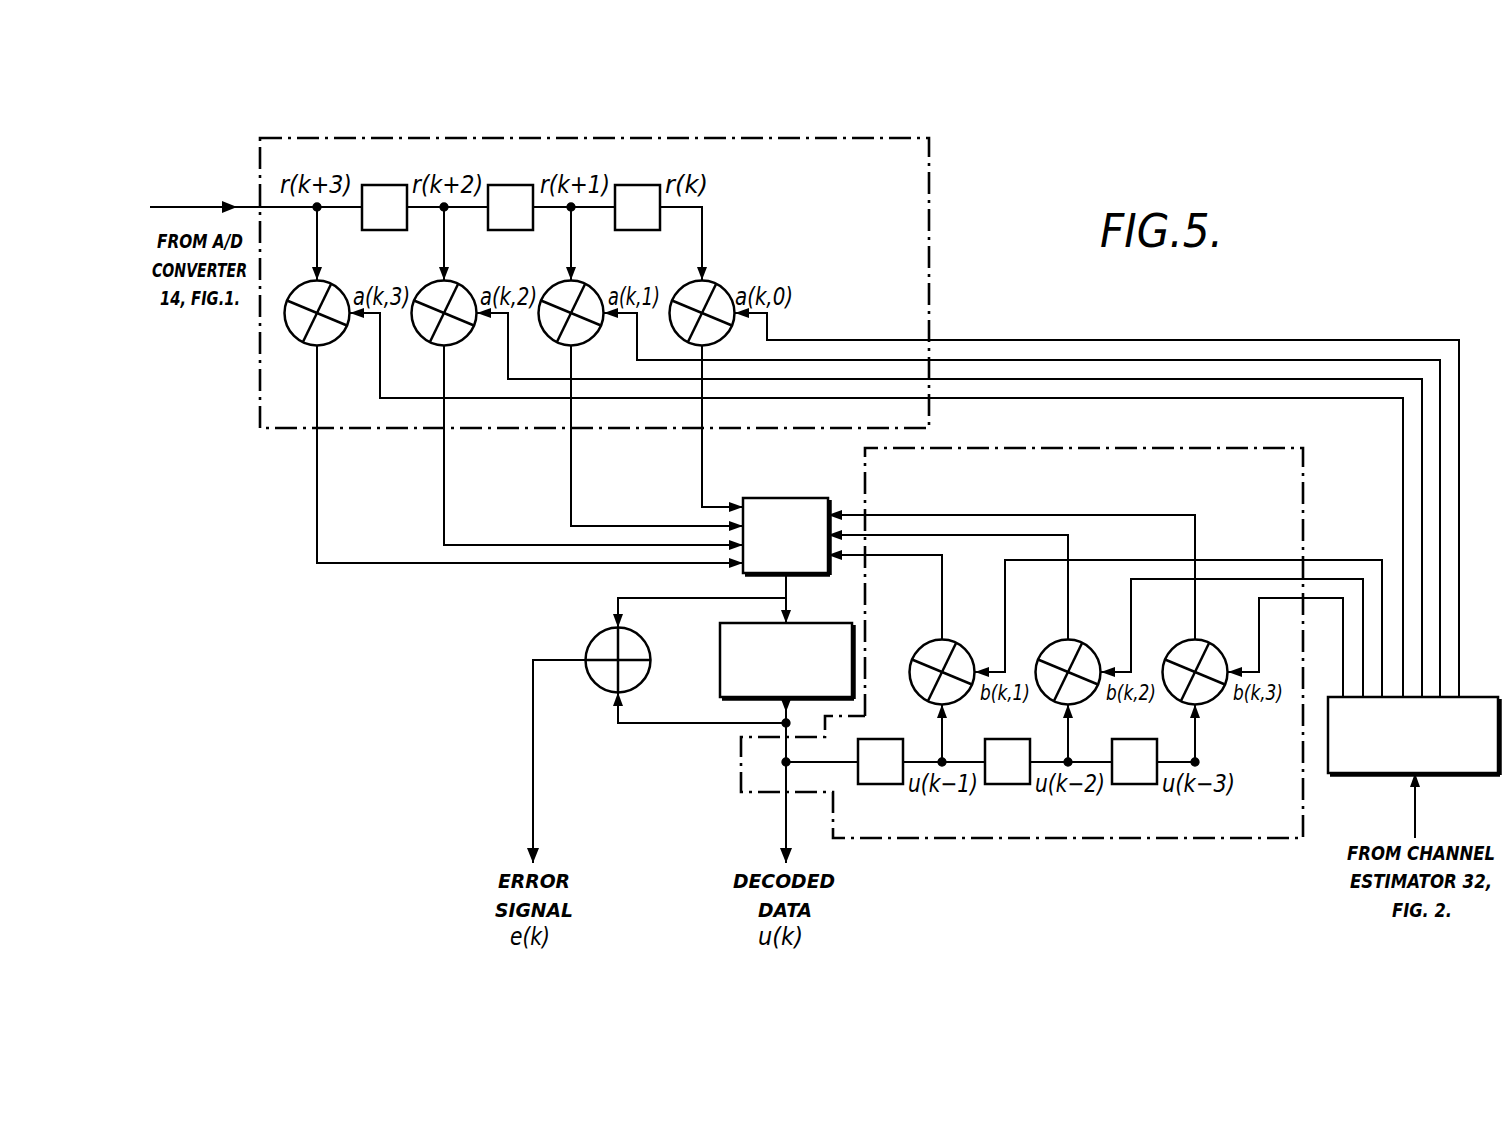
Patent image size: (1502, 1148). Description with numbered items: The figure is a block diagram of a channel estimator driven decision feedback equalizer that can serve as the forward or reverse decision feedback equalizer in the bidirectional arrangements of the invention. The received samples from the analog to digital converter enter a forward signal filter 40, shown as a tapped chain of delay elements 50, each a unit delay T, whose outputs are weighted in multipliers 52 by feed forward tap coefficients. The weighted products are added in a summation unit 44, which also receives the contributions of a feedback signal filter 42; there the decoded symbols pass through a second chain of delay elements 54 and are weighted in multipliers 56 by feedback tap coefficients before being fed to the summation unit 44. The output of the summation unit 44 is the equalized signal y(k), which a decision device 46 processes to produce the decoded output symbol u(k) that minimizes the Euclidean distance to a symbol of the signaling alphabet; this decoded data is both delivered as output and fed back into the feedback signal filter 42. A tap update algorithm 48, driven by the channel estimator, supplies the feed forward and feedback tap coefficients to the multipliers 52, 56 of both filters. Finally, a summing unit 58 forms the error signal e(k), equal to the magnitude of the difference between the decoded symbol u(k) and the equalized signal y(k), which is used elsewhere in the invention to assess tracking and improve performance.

The forward signal filter 40 is at (873, 270).
The feedback signal filter 42 is at (1176, 496).
The summation unit 44 is at (800, 498).
The decision device 46 is at (720, 670).
The tap update algorithm 48 is at (1369, 773).
The delay element 50 is at (384, 230).
The multiplier 52 is at (330, 345).
The delay element 54 is at (885, 784).
The multiplier 56 is at (917, 650).
The summing unit 58 is at (596, 640).